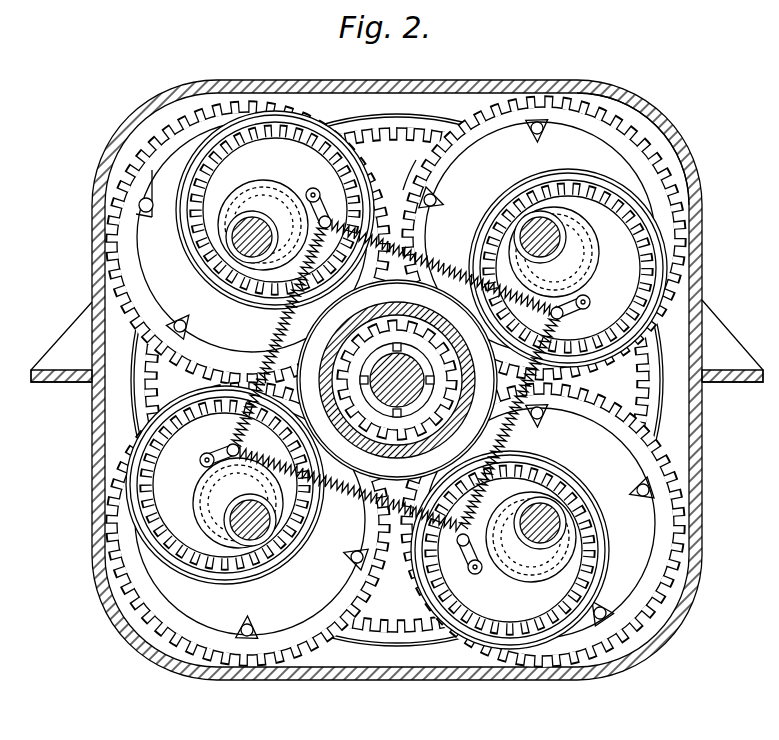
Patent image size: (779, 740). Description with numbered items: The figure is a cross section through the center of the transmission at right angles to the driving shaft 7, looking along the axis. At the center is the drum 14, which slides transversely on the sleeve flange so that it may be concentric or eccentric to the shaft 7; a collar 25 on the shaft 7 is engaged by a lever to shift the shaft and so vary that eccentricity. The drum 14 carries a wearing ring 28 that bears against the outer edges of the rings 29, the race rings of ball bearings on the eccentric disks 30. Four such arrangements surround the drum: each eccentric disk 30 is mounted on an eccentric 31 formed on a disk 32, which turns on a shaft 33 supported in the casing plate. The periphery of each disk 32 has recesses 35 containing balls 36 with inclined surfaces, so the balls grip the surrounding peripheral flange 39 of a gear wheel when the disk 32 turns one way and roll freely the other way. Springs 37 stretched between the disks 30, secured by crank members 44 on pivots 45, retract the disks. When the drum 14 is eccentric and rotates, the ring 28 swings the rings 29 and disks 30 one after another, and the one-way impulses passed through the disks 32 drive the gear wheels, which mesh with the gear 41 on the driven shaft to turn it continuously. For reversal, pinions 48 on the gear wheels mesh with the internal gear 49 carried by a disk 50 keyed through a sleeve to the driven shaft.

The driving shaft 7 is at (441, 80).
The drum 14 is at (522, 434).
The collar 25 is at (397, 375).
The wearing ring 28 is at (397, 380).
The rings 29 is at (396, 381).
The eccentric disks 30 is at (396, 380).
The eccentrics 31 is at (396, 381).
The disks 32 is at (395, 380).
The shafts 33 is at (262, 226).
The recesses 35 is at (372, 256).
The balls 36 is at (182, 320).
The springs 37 is at (395, 348).
The peripheral flanges 39 is at (580, 96).
The gear 41 is at (397, 393).
The crank members 44 is at (395, 372).
The pivots 45 is at (395, 380).
The pinions 48 is at (375, 399).
The internal gear 49 is at (397, 389).
The disk 50 is at (402, 175).